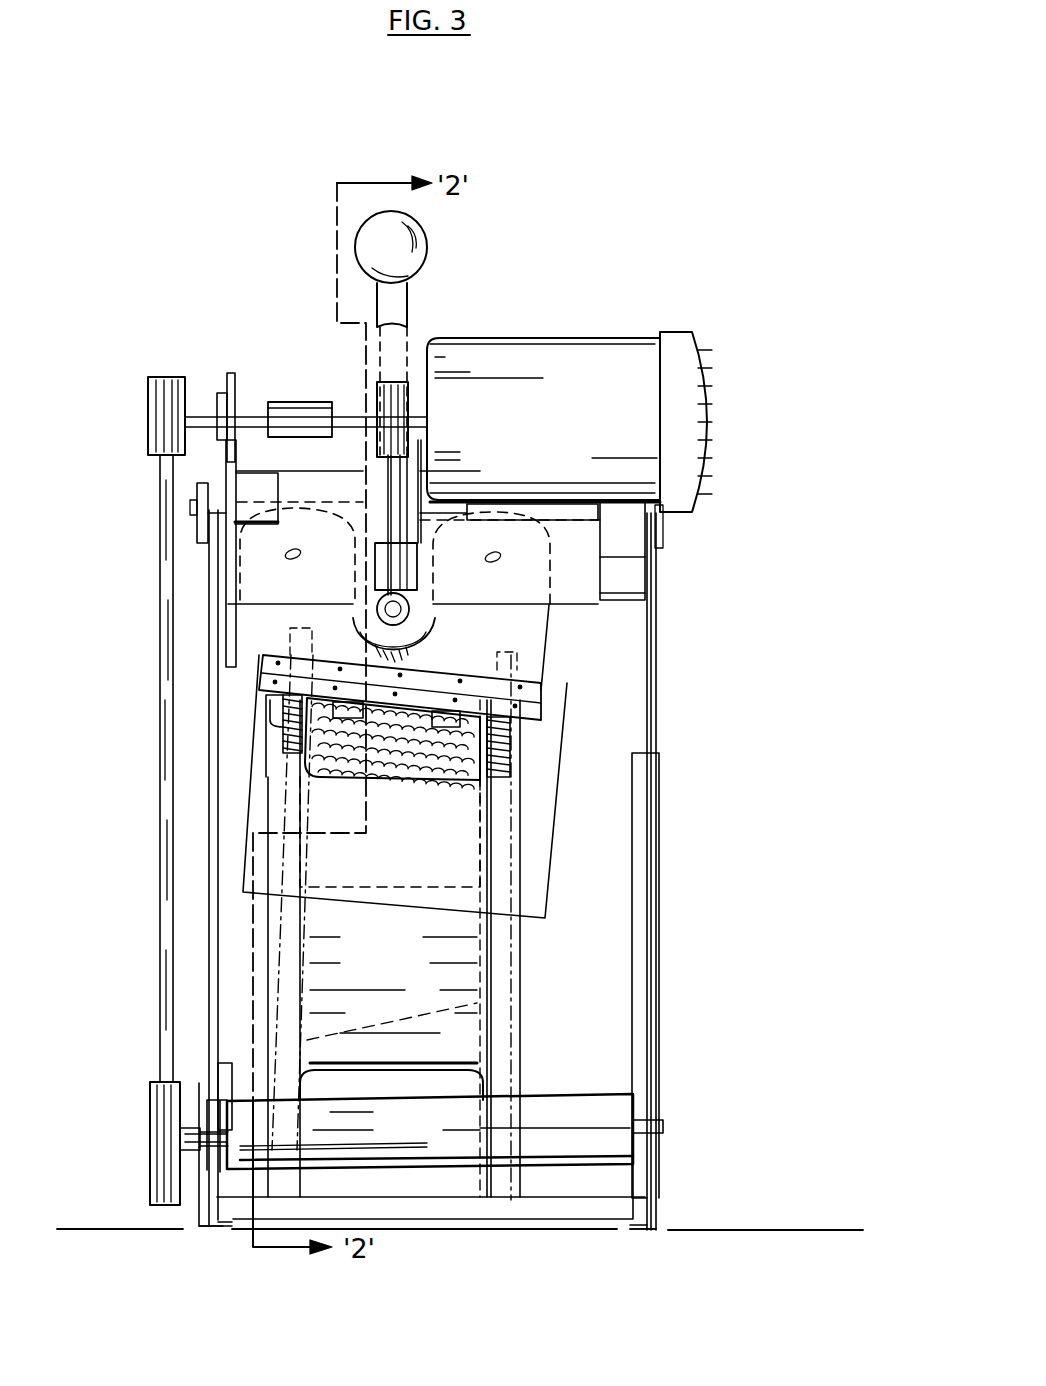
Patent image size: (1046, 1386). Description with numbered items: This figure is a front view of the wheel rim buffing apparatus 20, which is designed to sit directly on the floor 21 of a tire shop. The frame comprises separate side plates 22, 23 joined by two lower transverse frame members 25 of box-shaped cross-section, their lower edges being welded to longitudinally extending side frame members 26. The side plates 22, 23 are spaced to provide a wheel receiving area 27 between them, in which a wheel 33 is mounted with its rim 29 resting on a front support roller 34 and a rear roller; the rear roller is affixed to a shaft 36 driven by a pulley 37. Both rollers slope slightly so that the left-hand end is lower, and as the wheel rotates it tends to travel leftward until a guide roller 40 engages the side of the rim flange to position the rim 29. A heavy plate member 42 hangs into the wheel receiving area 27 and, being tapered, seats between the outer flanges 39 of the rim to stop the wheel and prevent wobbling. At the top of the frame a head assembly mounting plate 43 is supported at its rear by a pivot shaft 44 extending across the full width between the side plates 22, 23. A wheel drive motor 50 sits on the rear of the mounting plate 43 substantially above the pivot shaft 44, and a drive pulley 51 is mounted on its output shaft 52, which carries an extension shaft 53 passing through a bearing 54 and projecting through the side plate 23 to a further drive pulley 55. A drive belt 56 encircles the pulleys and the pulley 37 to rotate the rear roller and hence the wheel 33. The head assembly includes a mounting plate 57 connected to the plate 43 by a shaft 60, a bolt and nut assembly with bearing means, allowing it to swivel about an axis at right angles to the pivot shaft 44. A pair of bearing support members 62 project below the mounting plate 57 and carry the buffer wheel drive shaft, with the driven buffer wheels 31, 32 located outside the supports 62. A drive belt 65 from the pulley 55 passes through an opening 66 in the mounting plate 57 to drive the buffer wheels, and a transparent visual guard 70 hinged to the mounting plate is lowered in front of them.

The apparatus 20 is at (694, 806).
The floor 21 is at (764, 1222).
The side plate 22 is at (650, 690).
The side plate 23 is at (215, 668).
The lower transverse frame members 25 is at (585, 1215).
The side frame members 26 is at (203, 1226).
The wheel receiving area 27 is at (537, 978).
The rim 29 is at (500, 1080).
The buffer wheel 31 is at (510, 762).
The buffer wheel 32 is at (283, 730).
The wheel 33 is at (408, 1095).
The support roller 34 is at (625, 1100).
The shaft 36 is at (190, 1123).
The pulley 37 is at (150, 1152).
The outer flanges 39 is at (473, 1004).
The guide roller 40 is at (232, 1150).
The heavy plate member 42 is at (330, 775).
The head assembly mounting plate 43 is at (583, 595).
The pivot shaft 44 is at (215, 478).
The wheel drive motor 50 is at (550, 338).
The drive pulley 51 is at (368, 398).
The output shaft 52 is at (417, 412).
The extension shaft 53 is at (258, 410).
The bearing 54 is at (217, 393).
The drive pulley 55 is at (185, 378).
The drive belt 56 is at (160, 585).
The mounting plate 57 is at (528, 660).
The shaft 60 is at (430, 592).
The bearing support members 62 is at (443, 712).
The drive belt 65 is at (430, 486).
The opening 66 is at (665, 522).
The visual guard 70 is at (540, 821).